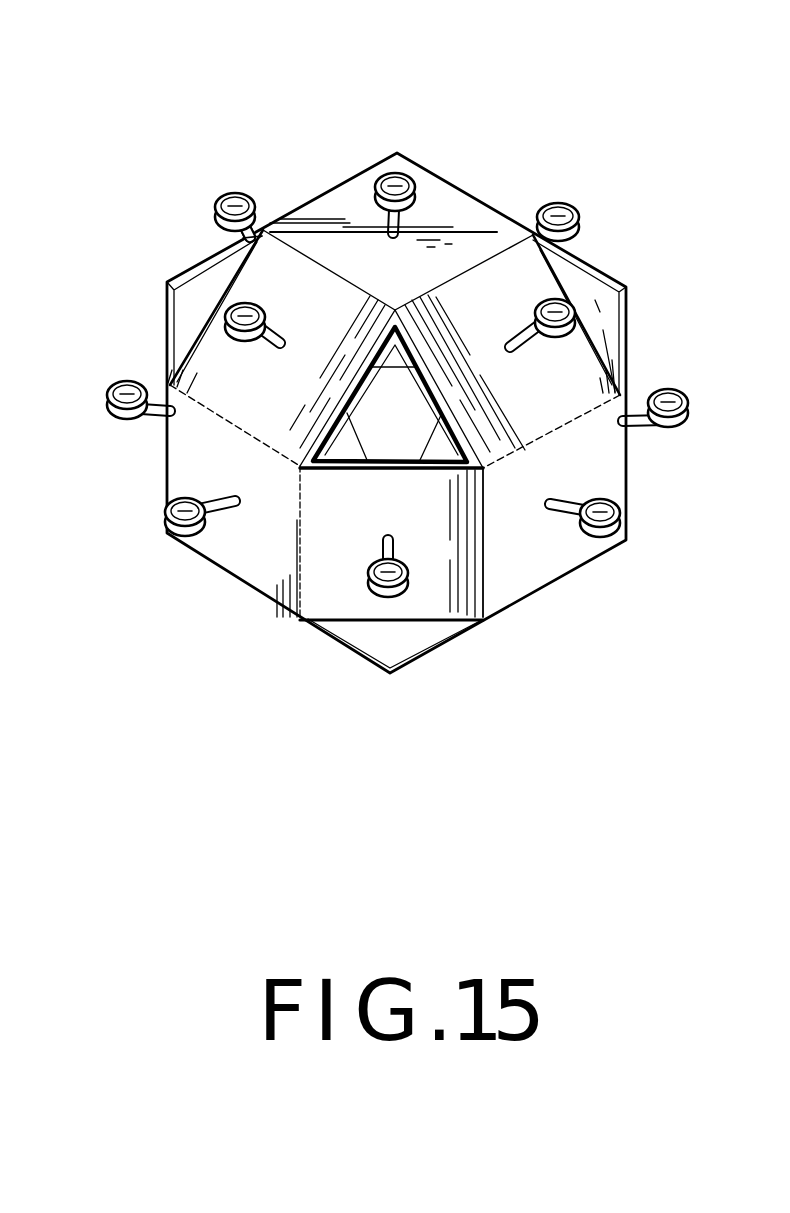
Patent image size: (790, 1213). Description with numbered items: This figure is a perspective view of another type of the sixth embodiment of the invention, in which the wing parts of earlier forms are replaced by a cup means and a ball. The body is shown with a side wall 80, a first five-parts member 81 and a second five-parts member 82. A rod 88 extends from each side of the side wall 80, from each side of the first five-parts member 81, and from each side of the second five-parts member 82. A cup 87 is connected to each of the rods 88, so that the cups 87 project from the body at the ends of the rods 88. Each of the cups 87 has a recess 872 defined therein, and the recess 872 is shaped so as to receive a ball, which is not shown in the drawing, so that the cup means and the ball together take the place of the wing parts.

The side wall 80 is at (537, 586).
The first five-parts member 81 is at (421, 140).
The second five-parts member 82 is at (334, 664).
The cup 87 is at (208, 181).
The recess 872 is at (236, 195).
The rod 88 is at (243, 236).